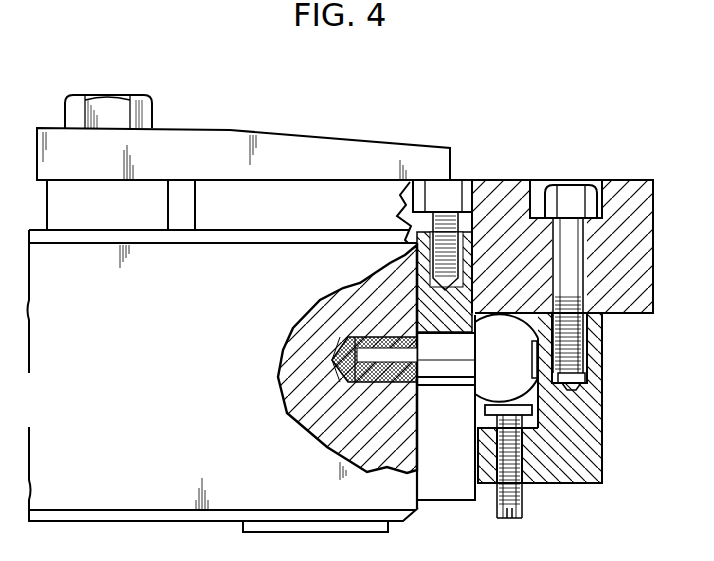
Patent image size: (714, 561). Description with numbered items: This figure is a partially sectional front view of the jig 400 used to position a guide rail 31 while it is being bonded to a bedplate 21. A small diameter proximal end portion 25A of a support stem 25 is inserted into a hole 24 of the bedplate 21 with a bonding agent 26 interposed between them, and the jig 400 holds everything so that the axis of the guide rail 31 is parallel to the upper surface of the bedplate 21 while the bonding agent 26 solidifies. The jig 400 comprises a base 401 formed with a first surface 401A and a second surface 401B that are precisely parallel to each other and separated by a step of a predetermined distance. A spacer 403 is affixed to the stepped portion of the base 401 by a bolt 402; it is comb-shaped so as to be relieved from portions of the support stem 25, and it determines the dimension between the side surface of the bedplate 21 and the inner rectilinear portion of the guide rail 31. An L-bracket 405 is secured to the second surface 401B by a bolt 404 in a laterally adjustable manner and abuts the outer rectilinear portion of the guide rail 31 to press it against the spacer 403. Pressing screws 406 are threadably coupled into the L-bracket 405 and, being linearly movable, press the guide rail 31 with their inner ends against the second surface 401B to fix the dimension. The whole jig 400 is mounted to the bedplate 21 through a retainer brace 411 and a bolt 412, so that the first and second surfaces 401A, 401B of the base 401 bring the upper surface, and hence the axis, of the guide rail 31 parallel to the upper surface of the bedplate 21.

The bedplate 21 is at (200, 510).
The hole 24 is at (372, 380).
The support stem 25 is at (446, 372).
The small diameter proximal end portion 25A is at (332, 364).
The bonding agent 26 is at (345, 378).
The guide rail 31 is at (527, 386).
The jig 400 is at (563, 324).
The base 401 is at (647, 200).
The first surface 401A is at (345, 243).
The second surface 401B is at (645, 320).
The bolt 402 is at (455, 192).
The spacer 403 is at (456, 500).
The bolt 404 is at (565, 195).
The L-bracket 405 is at (592, 438).
The pressing screw 406 is at (525, 512).
The retainer brace 411 is at (256, 140).
The bolt 412 is at (150, 108).